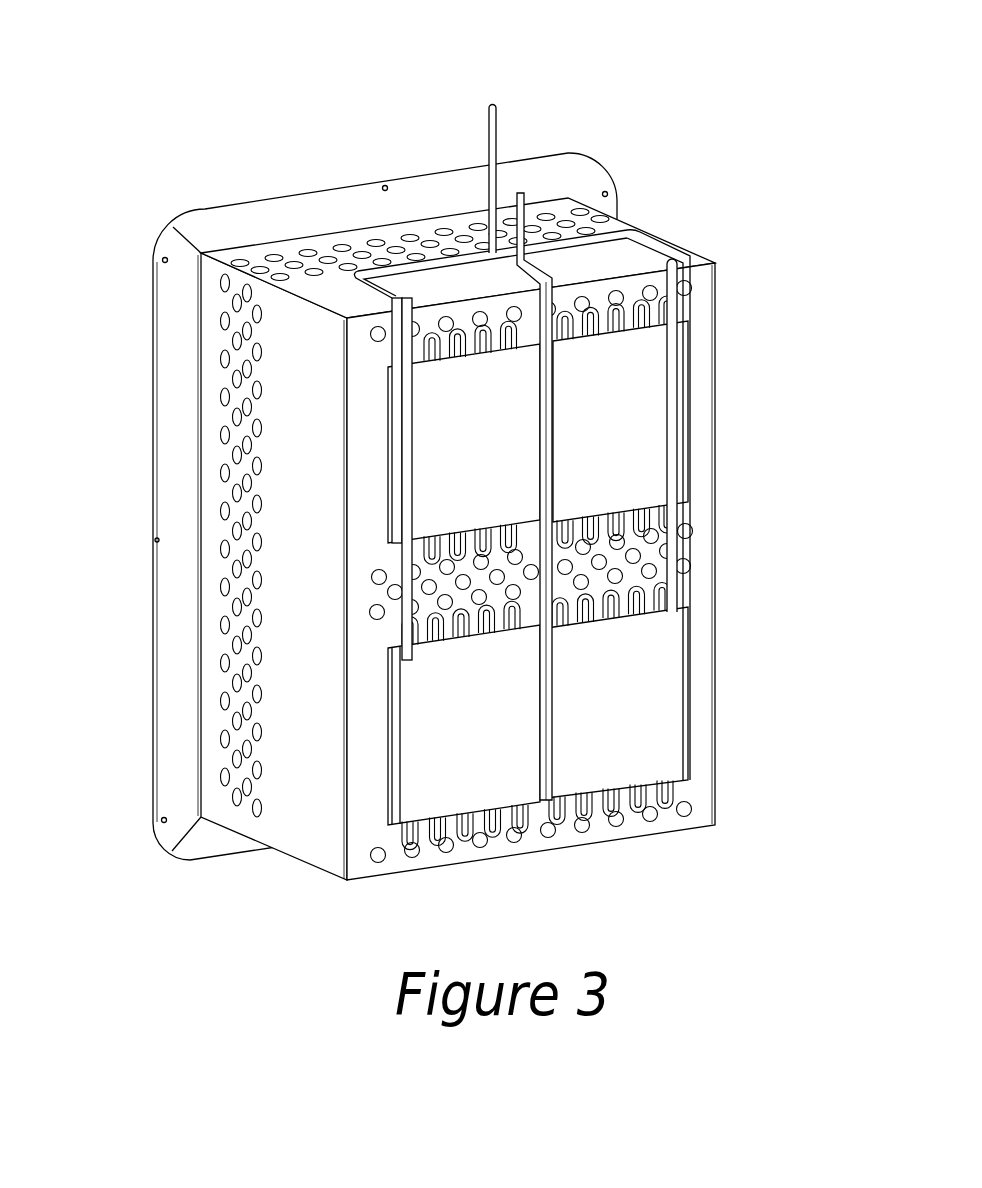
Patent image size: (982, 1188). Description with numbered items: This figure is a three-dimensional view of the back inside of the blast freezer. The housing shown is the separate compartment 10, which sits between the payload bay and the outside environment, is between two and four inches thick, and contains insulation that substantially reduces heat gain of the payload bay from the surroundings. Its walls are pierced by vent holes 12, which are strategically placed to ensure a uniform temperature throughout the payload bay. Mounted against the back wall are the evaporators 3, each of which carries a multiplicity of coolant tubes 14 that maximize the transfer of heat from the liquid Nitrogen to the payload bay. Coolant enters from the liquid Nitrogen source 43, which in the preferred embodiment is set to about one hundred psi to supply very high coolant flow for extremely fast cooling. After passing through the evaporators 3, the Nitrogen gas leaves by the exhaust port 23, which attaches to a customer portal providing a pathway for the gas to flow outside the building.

The evaporator 3 is at (618, 427).
The separate compartment 10 is at (178, 363).
The vent holes 12 is at (223, 557).
The coolant tubes 14 is at (690, 276).
The exhaust port 23 is at (525, 190).
The liquid Nitrogen source 43 is at (487, 140).